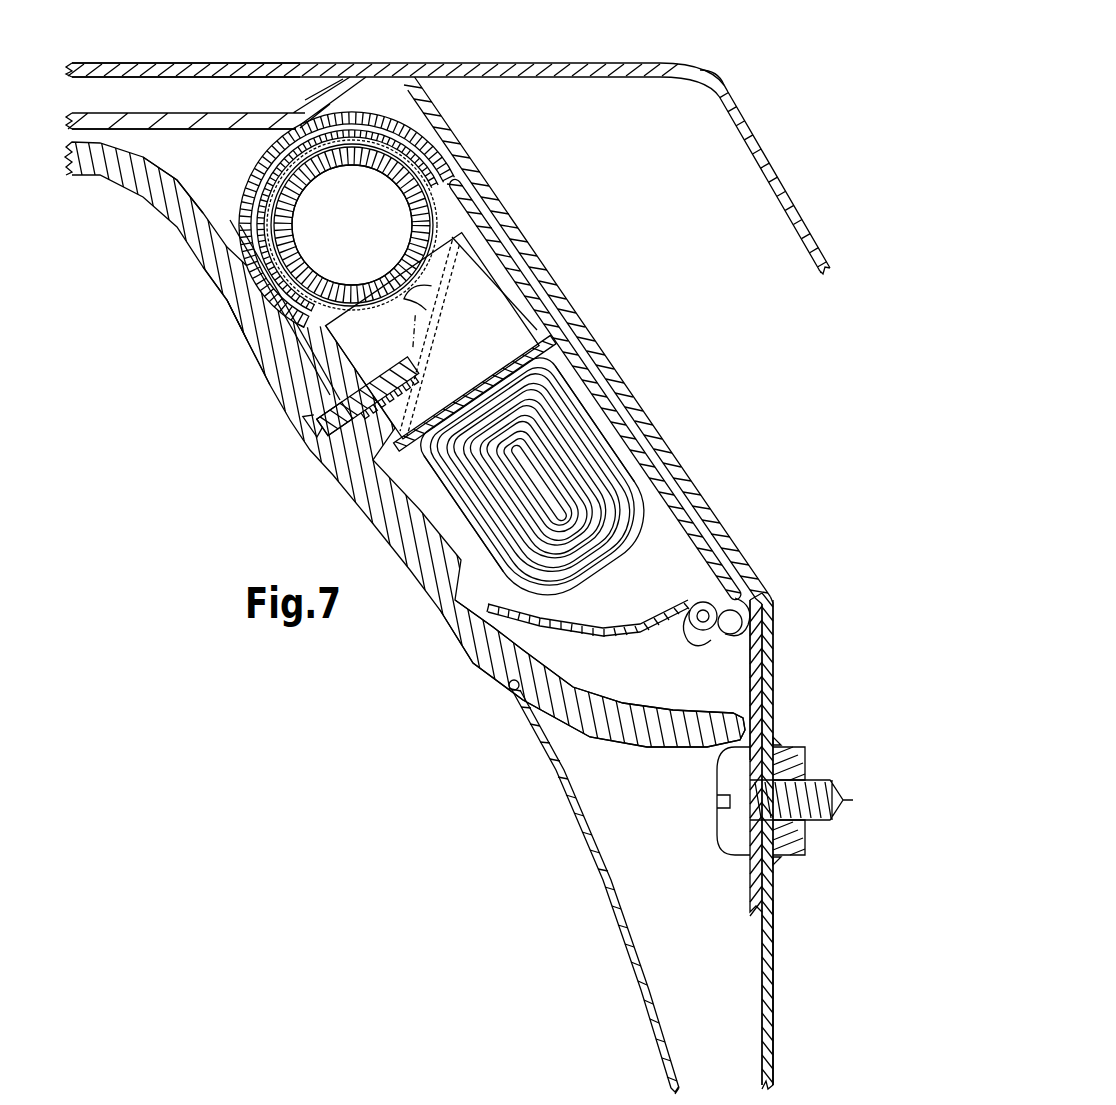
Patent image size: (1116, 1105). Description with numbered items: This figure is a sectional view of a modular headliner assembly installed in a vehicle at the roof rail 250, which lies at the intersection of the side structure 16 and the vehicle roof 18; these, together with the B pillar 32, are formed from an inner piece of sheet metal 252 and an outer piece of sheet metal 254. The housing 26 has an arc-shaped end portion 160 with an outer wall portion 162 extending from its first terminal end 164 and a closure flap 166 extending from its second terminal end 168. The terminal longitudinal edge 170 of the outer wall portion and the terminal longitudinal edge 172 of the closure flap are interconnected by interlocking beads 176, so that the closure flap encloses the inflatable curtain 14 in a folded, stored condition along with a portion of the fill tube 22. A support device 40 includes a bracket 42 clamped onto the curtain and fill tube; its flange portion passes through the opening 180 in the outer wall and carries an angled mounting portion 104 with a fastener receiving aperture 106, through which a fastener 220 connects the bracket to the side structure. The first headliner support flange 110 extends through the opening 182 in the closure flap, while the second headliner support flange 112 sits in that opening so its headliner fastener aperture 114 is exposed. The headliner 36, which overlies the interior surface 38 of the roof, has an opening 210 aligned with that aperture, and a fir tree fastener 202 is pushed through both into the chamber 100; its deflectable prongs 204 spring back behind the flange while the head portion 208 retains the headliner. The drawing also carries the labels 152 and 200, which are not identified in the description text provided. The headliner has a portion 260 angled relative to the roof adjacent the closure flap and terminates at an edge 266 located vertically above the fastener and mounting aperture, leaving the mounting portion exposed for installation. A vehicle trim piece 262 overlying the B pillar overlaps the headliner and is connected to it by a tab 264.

The inflatable curtain 14 is at (575, 445).
The side structure 16 is at (768, 637).
The vehicle roof 18 is at (240, 68).
The fill tube 22 is at (240, 215).
The housing 26 is at (228, 255).
The B pillar 32 is at (768, 905).
The headliner 36 is at (118, 168).
The interior surface of the roof 38 is at (186, 148).
The support device 40 is at (440, 175).
The bracket 42 is at (352, 225).
The chamber 100 is at (505, 322).
The mounting portion 104 is at (752, 882).
The fastener receiving aperture 106 is at (745, 840).
The first headliner support flange 110 is at (410, 450).
The second headliner support flange 112 is at (345, 455).
The headliner fastener aperture 114 is at (350, 440).
The retaining strip 152 is at (632, 612).
The arc-shaped end portion 160 is at (352, 112).
The outer wall portion 162 is at (697, 502).
The first terminal end 164 is at (462, 165).
The closure flap 166 is at (493, 595).
The second terminal end 168 is at (275, 305).
The terminal longitudinal edge of the outer wall portion 170 is at (737, 643).
The terminal longitudinal edge of the closure flap 172 is at (705, 600).
The interlocking beads 176 is at (697, 633).
The opening in the outer wall 180 is at (550, 355).
The opening in the closure flap 182 is at (285, 330).
The compartment 200 is at (405, 375).
The fastener 202 is at (340, 445).
The prongs 204 is at (350, 334).
The head portion 208 is at (320, 400).
The opening in the headliner 210 is at (330, 425).
The fastener 220 is at (812, 790).
The vehicle roof rail 250 is at (725, 82).
The inner piece of sheet metal 252 is at (190, 118).
The outer piece of sheet metal 254 is at (135, 67).
The portion of the headliner 260 is at (235, 270).
The vehicle trim piece 262 is at (577, 800).
The tab 264 is at (510, 688).
The edge of the headliner 266 is at (768, 730).